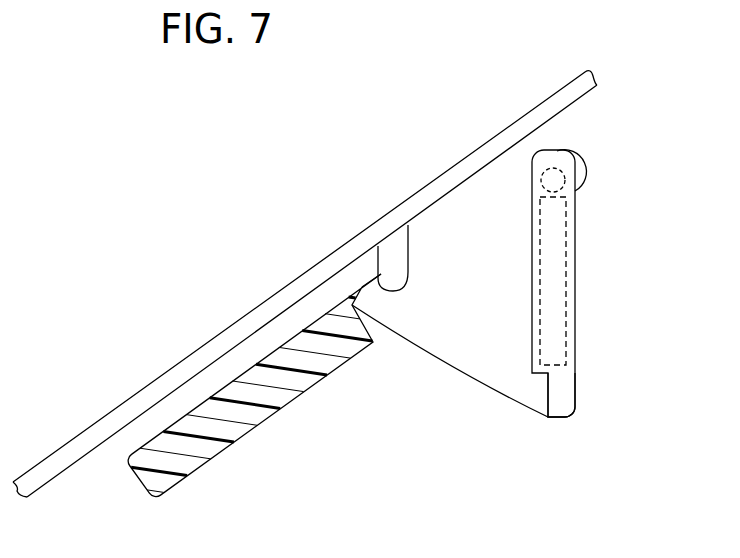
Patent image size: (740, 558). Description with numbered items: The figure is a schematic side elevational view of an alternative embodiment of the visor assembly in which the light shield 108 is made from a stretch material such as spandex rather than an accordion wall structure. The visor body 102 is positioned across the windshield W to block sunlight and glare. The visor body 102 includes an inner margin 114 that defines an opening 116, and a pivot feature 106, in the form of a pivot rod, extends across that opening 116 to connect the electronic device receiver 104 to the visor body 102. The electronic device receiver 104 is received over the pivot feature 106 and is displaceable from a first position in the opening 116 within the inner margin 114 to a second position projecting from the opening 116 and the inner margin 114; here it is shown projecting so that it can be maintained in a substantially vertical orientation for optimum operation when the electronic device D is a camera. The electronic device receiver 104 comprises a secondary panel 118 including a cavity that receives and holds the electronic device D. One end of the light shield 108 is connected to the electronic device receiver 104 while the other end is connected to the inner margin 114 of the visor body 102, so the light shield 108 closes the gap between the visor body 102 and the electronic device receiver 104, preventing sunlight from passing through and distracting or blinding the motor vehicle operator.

The windshield W is at (197, 358).
The visor body 102 is at (209, 453).
The electronic device receiver 104 is at (628, 280).
The pivot feature 106 is at (563, 172).
The light shield 108 is at (463, 375).
The inner margin 114 is at (407, 268).
The opening 116 is at (382, 262).
The secondary panel 118 is at (577, 388).
The electronic device D is at (567, 271).